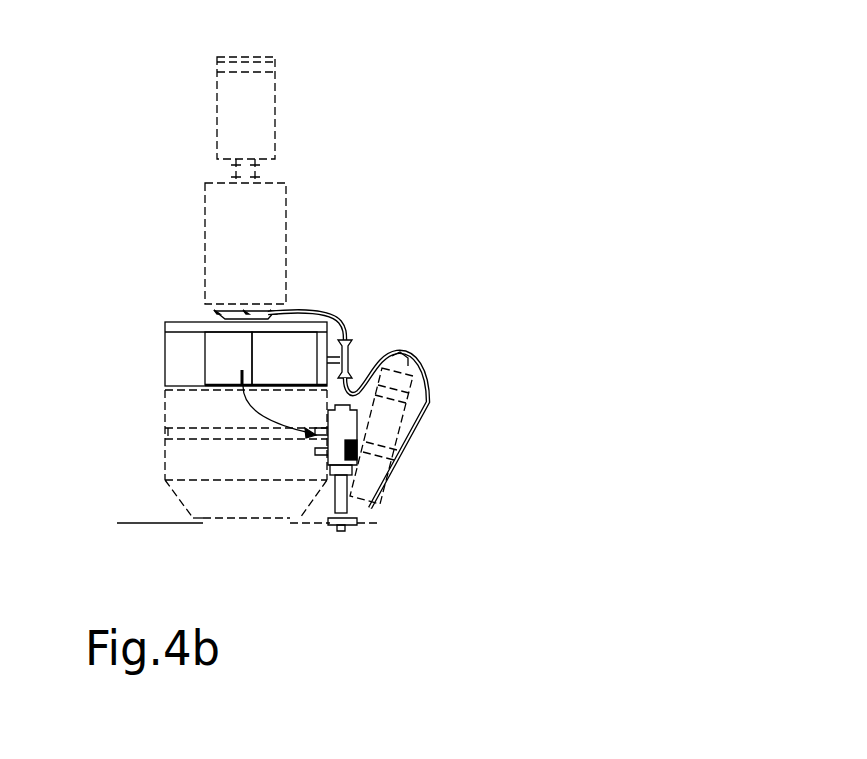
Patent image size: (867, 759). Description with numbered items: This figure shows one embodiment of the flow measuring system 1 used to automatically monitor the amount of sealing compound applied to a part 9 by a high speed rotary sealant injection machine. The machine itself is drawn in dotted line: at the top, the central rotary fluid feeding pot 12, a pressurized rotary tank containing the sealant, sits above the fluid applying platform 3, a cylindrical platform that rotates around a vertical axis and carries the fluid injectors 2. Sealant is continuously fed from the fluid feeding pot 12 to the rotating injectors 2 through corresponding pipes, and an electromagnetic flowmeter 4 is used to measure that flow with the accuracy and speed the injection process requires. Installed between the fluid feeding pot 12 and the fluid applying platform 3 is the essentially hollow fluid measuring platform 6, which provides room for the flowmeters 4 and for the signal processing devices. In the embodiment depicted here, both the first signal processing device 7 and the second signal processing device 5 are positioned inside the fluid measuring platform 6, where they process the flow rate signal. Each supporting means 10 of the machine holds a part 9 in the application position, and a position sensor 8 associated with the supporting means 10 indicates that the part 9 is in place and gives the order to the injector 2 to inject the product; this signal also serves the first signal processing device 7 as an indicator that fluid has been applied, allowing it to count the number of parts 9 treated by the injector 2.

The flow measuring system 1 is at (362, 241).
The fluid injector 2 is at (380, 417).
The fluid applying platform 3 is at (205, 462).
The electromagnetic flowmeter 4 is at (343, 352).
The second signal processing device 5 is at (283, 358).
The fluid measuring platform 6 is at (197, 352).
The first signal processing device 7 is at (227, 352).
The position sensor 8 is at (337, 533).
The part 9 is at (364, 515).
The supporting means 10 is at (357, 518).
The fluid feeding pot 12 is at (230, 252).